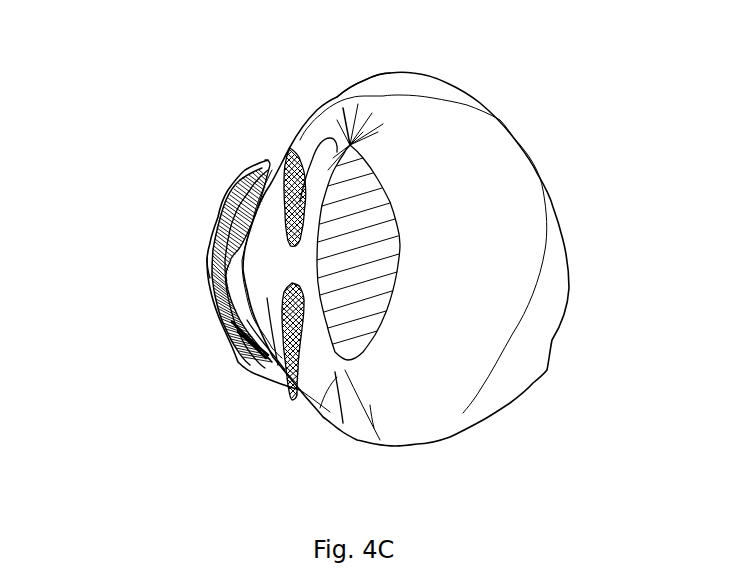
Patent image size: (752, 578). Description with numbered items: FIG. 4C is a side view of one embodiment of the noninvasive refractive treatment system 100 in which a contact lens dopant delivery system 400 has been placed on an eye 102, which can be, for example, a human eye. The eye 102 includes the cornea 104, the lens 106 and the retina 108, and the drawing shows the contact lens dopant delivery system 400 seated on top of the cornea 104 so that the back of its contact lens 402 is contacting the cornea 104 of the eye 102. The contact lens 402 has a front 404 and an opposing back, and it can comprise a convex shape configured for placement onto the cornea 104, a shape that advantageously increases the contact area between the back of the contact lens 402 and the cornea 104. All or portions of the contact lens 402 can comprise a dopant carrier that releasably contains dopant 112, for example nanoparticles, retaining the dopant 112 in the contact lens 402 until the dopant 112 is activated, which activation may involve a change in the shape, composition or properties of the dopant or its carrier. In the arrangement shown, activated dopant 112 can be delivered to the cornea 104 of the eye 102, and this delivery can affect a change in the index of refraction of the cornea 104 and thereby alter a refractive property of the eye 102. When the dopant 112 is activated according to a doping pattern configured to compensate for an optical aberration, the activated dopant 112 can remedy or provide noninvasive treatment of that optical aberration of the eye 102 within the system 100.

The noninvasive refractive treatment system 100 is at (598, 106).
The eye 102 is at (355, 85).
The cornea 104 is at (231, 348).
The lens 106 is at (387, 300).
The retina 108 is at (569, 291).
The dopant 112 is at (222, 198).
The contact lens dopant delivery system 400 is at (121, 152).
The contact lens 402 is at (238, 176).
The front 404 is at (207, 257).